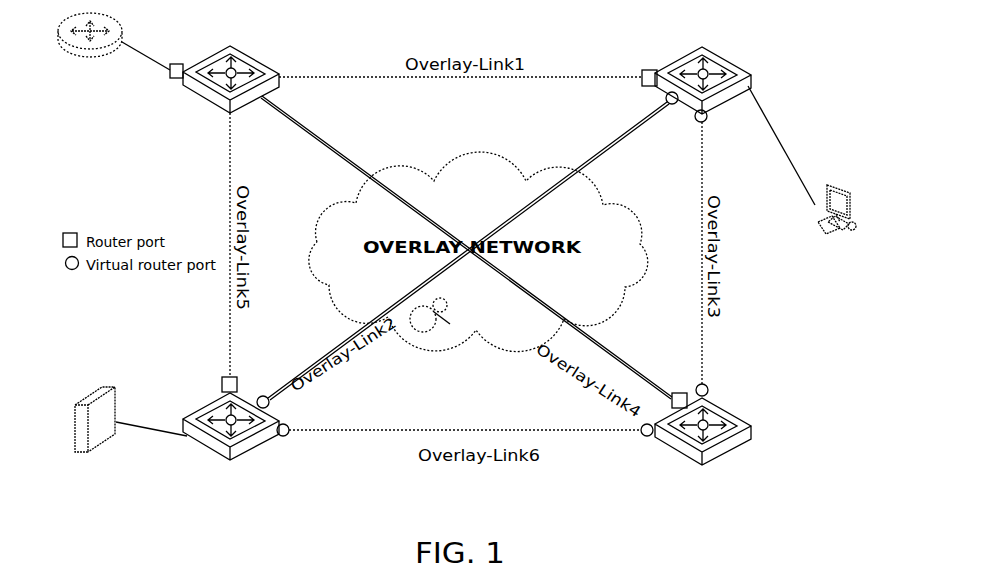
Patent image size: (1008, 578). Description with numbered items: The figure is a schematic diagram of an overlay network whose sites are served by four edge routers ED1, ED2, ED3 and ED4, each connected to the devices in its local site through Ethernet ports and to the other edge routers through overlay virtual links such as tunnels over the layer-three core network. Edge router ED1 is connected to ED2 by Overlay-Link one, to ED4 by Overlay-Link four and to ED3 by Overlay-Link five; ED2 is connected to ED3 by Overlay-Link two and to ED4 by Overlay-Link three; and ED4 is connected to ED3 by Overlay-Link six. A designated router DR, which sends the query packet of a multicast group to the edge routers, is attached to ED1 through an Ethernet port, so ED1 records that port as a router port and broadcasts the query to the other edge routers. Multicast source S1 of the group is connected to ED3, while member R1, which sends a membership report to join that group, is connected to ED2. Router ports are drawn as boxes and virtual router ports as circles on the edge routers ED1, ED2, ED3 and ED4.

The edge router ED1 is at (214, 68).
The edge router ED2 is at (704, 73).
The edge router ED3 is at (236, 432).
The edge router ED4 is at (696, 436).
The designated router DR is at (114, 35).
The member R1 is at (804, 173).
The multicast source S1 is at (127, 441).